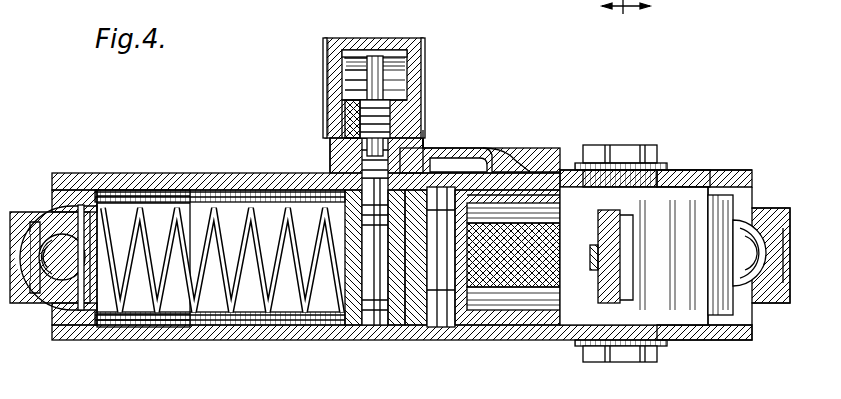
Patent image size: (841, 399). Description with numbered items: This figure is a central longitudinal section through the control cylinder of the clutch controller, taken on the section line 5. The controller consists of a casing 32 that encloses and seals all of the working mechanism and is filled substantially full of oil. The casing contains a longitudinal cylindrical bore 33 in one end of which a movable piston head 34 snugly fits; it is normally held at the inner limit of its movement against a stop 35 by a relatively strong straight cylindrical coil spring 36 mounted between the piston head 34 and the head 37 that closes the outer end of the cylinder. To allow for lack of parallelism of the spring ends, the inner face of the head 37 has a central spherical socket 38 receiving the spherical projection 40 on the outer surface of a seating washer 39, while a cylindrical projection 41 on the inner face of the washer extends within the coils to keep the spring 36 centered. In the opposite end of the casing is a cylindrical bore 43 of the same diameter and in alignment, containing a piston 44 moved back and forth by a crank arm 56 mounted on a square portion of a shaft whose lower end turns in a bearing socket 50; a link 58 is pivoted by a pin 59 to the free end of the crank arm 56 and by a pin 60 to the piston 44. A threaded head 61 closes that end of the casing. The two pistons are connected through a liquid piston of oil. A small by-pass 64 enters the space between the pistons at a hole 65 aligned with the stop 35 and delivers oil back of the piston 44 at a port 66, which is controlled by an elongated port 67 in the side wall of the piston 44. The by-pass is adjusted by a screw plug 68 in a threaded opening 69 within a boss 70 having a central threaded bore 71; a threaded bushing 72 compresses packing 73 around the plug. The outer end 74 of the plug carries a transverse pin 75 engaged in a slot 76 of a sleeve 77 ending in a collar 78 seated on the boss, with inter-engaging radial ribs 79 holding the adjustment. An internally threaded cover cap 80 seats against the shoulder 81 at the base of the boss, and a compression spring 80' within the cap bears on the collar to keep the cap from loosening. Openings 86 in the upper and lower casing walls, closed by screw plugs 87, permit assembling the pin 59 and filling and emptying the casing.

The section line 5 is at (626, 13).
The casing 32 is at (214, 178).
The longitudinal cylindrical bore 33 is at (172, 195).
The piston head 34 is at (282, 322).
The stop 35 is at (374, 322).
The spring 36 is at (226, 215).
The head 37 is at (30, 212).
The spherical socket 38 is at (64, 268).
The seating washer 39 is at (82, 205).
The spherical projection 40 is at (70, 292).
The cylindrical projection 41 is at (104, 230).
The cylindrical bore 43 is at (548, 325).
The piston 44 is at (497, 320).
The bearing socket 50 is at (606, 258).
The crank arm 56 is at (608, 290).
The link 58 is at (545, 272).
The pin 59 is at (605, 243).
The pin 60 is at (440, 315).
The threaded head 61 is at (755, 218).
The by-pass 64 is at (485, 158).
The by-pass inlet hole 65 is at (370, 175).
The port 66 is at (485, 193).
The elongated port 67 is at (548, 170).
The adjustable screw plug 68 is at (340, 143).
The threaded opening 69 is at (342, 162).
The boss 70 is at (342, 110).
The threaded bore 71 is at (400, 122).
The threaded bushing 72 is at (360, 118).
The packing 73 is at (348, 133).
The outer end of plug 74 is at (372, 55).
The pin 75 is at (350, 62).
The slot 76 is at (385, 56).
The sleeve 77 is at (402, 82).
The collar 78 is at (408, 102).
The radial ribs 79 is at (328, 76).
The cover cap 80 is at (381, 73).
The compression spring 80' is at (397, 85).
The shoulder 81 is at (426, 136).
The openings 86 is at (600, 178).
The screw plugs 87 is at (630, 362).